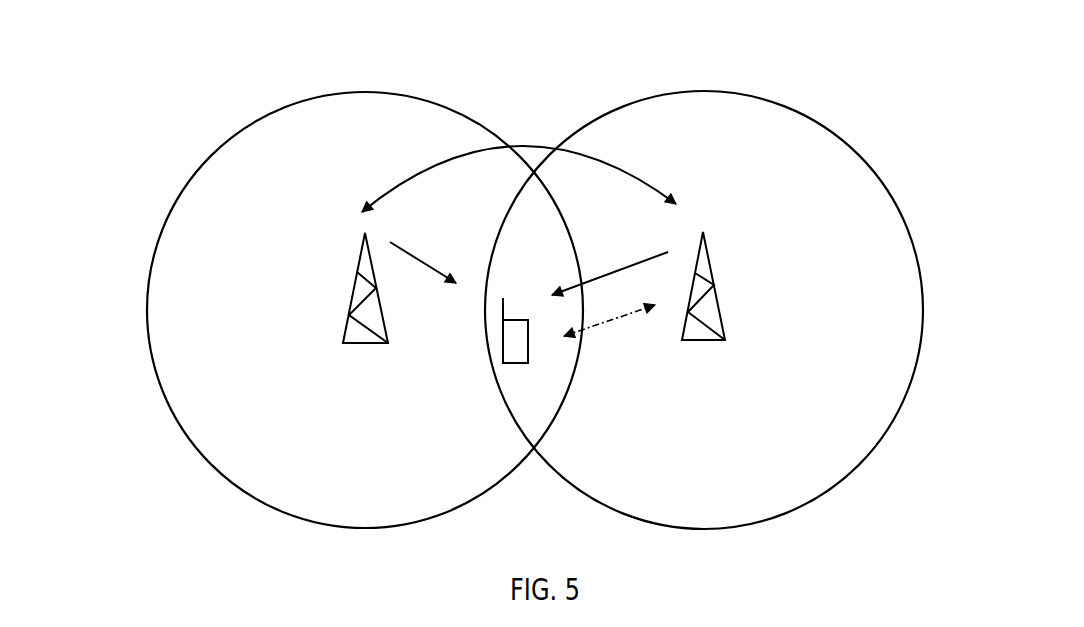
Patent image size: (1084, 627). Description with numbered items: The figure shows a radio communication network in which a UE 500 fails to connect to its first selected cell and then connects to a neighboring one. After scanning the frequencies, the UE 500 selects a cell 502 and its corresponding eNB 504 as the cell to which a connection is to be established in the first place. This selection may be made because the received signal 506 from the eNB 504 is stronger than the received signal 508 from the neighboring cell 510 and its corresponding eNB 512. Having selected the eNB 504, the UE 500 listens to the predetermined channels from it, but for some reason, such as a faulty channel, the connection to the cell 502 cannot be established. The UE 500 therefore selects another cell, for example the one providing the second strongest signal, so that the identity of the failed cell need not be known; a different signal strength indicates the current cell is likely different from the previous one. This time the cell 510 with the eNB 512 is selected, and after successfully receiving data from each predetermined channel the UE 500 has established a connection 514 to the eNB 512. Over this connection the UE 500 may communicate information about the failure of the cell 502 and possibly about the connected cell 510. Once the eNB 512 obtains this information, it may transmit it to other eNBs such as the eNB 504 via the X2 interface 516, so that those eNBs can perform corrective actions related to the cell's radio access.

The UE 500 is at (513, 363).
The cell 502 is at (148, 287).
The eNB 504 is at (349, 315).
The received signal 506 is at (430, 260).
The received signal 508 is at (607, 273).
The neighboring cell 510 is at (778, 100).
The eNB 512 is at (714, 285).
The connection 514 is at (629, 316).
The X2 interface 516 is at (622, 173).